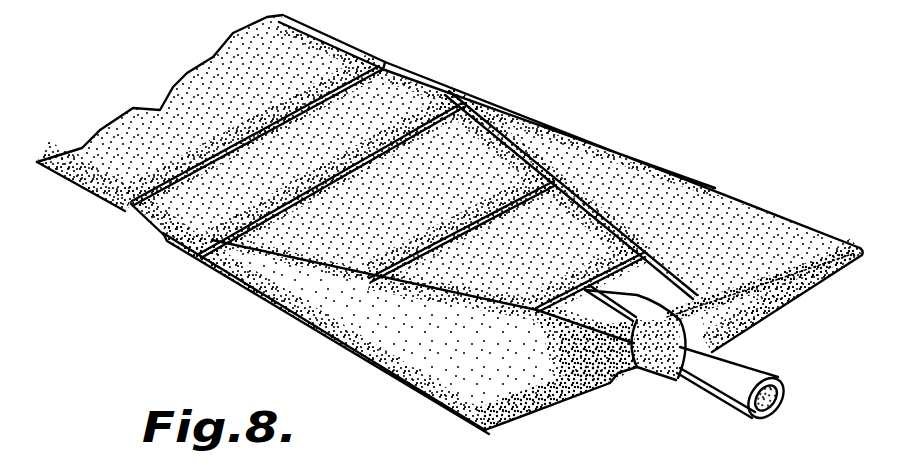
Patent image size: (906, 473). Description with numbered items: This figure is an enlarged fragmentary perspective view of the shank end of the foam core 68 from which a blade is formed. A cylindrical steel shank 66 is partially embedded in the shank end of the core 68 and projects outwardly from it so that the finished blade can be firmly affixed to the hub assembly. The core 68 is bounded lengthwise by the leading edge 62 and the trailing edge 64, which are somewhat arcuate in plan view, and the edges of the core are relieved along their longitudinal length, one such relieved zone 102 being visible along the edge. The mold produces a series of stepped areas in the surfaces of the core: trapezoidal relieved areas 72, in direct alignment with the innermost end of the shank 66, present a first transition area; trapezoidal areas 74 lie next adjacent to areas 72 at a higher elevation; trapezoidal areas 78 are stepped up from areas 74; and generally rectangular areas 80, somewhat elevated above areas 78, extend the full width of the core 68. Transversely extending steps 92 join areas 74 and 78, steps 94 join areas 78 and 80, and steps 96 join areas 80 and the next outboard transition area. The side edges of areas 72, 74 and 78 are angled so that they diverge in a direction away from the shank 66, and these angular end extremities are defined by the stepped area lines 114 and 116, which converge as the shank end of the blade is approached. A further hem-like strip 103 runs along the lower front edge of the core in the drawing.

The leading edge 62 is at (438, 82).
The trailing edge 64 is at (86, 193).
The steel shank 66 is at (745, 363).
The foam core 68 is at (716, 186).
The trapezoidal relieved areas 72 is at (662, 272).
The trapezoidal areas 74 is at (508, 251).
The trapezoidal areas 78 is at (427, 186).
The generally rectangular areas 80 is at (299, 165).
The steps 92 is at (481, 220).
The steps 94 is at (395, 152).
The steps 96 is at (240, 143).
The relieved zone 102 is at (335, 44).
The front hem strip 103 is at (403, 381).
The stepped area line 114 is at (415, 287).
The stepped area line 116 is at (593, 203).